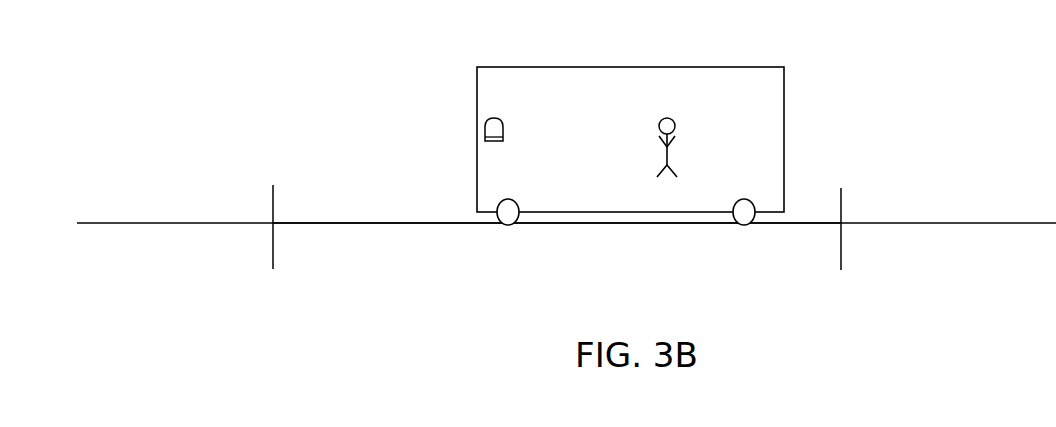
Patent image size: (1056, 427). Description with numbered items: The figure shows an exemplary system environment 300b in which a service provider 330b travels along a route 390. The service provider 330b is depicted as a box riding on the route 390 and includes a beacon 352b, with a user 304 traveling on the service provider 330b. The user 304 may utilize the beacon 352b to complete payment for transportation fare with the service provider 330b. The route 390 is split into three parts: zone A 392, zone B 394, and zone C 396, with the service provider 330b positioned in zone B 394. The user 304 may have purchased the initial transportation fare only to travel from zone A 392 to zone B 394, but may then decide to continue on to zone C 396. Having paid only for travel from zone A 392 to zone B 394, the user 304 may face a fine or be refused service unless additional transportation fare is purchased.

The system environment 300b is at (892, 60).
The service provider 330b is at (753, 108).
The beacon 352b is at (561, 147).
The user 304 is at (670, 165).
The route 390 is at (566, 205).
The zone A 392 is at (175, 227).
The zone B 394 is at (557, 248).
The zone C 396 is at (936, 229).